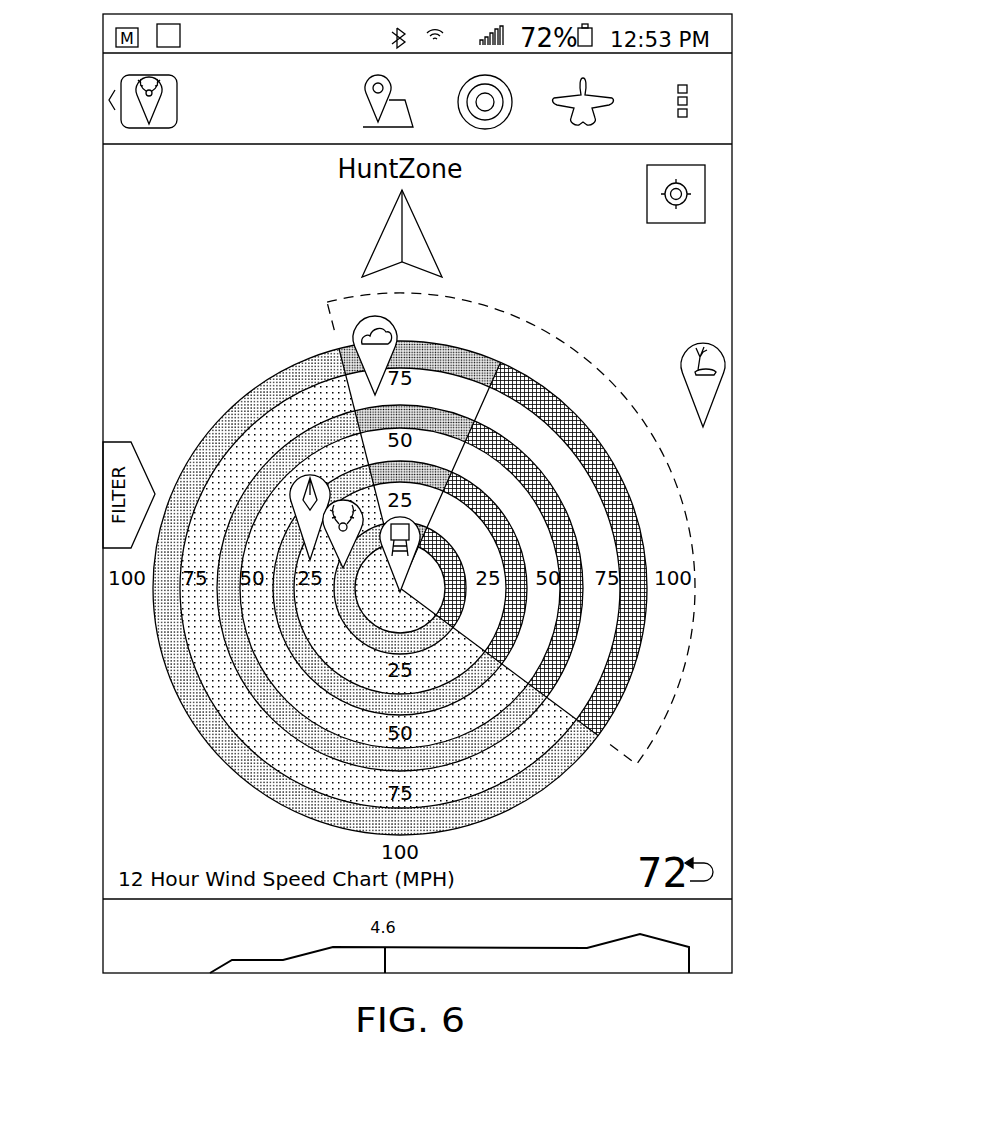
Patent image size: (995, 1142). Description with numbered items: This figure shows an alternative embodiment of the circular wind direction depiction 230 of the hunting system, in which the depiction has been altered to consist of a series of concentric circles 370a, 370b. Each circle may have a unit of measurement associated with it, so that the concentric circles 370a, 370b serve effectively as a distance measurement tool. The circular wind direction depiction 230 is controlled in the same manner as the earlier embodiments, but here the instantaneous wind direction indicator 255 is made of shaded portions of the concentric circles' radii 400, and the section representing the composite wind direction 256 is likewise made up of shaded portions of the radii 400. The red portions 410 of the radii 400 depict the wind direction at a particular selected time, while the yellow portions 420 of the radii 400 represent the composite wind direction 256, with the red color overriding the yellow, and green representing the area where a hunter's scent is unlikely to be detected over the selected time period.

The instantaneous wind direction indicator 255 is at (480, 358).
The red portions 410 is at (462, 417).
The composite wind direction section 256 is at (688, 503).
The yellow portions 420 is at (647, 618).
The circular wind direction depiction 230 is at (563, 763).
The radii of the concentric circles 400 is at (357, 398).
The concentric circle 370a is at (170, 646).
The concentric circle 370b is at (247, 672).